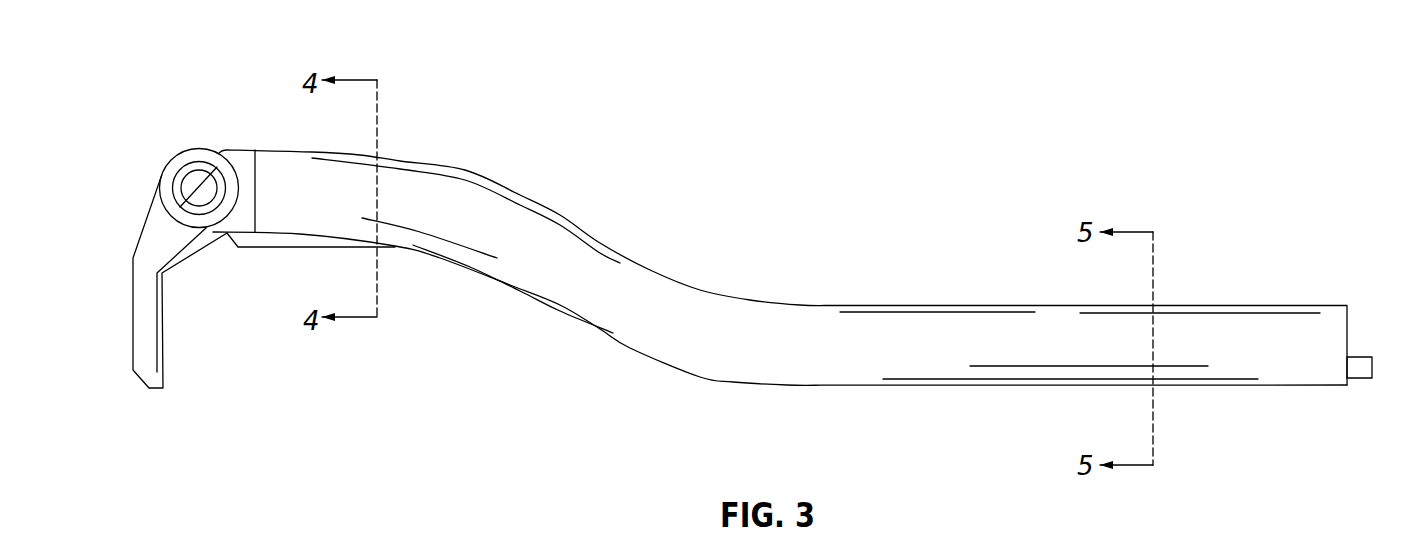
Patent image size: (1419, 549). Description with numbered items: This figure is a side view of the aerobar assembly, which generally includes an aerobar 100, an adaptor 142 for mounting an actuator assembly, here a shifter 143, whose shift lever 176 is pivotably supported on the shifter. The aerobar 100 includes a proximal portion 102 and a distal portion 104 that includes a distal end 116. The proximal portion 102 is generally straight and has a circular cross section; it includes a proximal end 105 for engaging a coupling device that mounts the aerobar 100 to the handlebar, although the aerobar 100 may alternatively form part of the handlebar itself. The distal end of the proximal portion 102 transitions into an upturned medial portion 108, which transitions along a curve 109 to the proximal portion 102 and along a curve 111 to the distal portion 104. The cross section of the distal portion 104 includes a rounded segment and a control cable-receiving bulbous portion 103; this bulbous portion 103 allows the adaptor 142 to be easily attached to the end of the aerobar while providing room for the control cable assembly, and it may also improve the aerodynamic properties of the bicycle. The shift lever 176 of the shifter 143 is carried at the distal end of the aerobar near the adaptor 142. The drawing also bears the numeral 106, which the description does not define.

The aerobar 100 is at (852, 280).
The proximal portion 102 is at (1288, 295).
The control cable-receiving bulbous portion 103 is at (230, 243).
The distal portion 104 is at (282, 130).
The proximal end 105 is at (1350, 385).
The lever 106 is at (329, 540).
The medial portion 108 is at (517, 310).
The curve 109 is at (710, 390).
The curve 111 is at (465, 168).
The distal end 116 is at (255, 150).
The adaptor 142 is at (250, 258).
The shifter 143 is at (125, 195).
The shift lever 176 is at (143, 330).